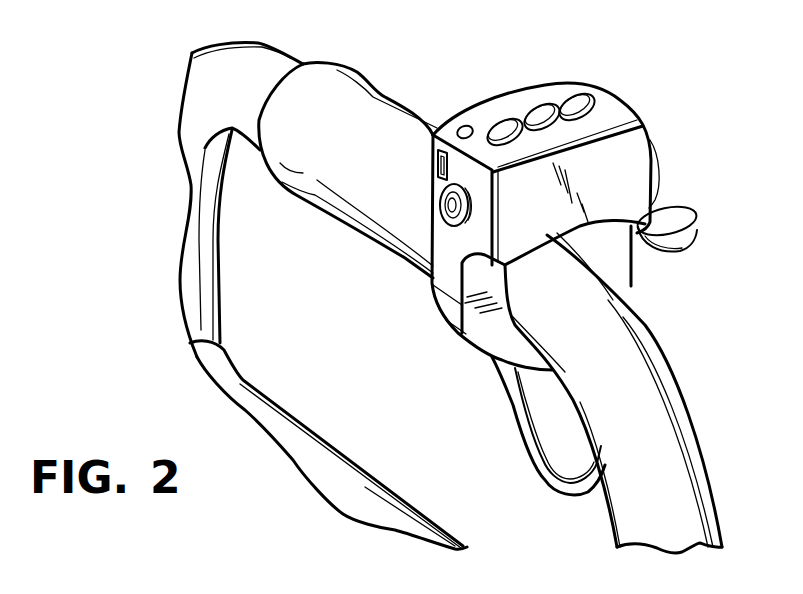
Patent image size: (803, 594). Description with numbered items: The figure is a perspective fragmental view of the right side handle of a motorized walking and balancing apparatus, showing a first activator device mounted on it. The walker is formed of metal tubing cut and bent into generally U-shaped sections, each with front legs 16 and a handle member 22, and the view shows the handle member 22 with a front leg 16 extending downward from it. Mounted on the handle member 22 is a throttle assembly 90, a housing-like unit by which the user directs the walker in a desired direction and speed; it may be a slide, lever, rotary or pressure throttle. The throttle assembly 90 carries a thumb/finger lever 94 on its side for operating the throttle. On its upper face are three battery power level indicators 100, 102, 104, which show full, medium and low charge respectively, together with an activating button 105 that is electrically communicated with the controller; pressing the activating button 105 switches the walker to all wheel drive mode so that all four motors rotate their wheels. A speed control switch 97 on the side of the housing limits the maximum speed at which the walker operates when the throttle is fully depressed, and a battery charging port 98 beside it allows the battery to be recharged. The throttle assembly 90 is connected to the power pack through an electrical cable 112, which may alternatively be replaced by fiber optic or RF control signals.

The front legs 16 is at (677, 408).
The handle member 22 is at (347, 92).
The throttle assembly 90 is at (619, 156).
The thumb/finger lever 94 is at (671, 221).
The speed control switch 97 is at (436, 169).
The battery charging port 98 is at (441, 209).
The battery power level indicator (Full) 100 is at (510, 127).
The battery power level indicator (Medium) 102 is at (544, 114).
The battery power level indicator (Low) 104 is at (578, 103).
The activating button 105 is at (462, 126).
The electrical cable 112 is at (552, 485).